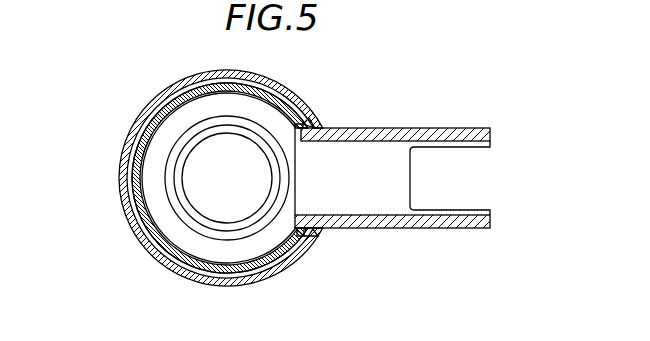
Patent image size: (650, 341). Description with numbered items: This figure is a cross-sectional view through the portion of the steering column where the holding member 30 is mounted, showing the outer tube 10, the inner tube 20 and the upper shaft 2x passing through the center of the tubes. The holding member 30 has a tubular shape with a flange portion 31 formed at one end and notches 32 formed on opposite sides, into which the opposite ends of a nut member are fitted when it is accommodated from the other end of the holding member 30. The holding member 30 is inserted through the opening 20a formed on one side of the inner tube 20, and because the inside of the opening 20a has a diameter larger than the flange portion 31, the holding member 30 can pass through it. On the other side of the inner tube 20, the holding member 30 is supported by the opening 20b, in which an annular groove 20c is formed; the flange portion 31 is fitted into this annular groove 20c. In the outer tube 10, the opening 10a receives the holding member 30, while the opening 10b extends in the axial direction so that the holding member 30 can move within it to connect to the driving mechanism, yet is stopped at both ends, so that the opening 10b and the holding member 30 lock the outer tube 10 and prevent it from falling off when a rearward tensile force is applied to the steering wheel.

The inner tube 20 is at (168, 123).
The opening 20a is at (128, 209).
The opening 20b is at (313, 122).
The annular groove 20c is at (302, 118).
The outer tube 10 is at (209, 290).
The opening 10a is at (137, 235).
The opening 10b is at (314, 241).
The upper shaft 2x is at (172, 166).
The holding member 30 is at (410, 126).
The flange portion 31 is at (305, 250).
The notch 32 is at (474, 208).